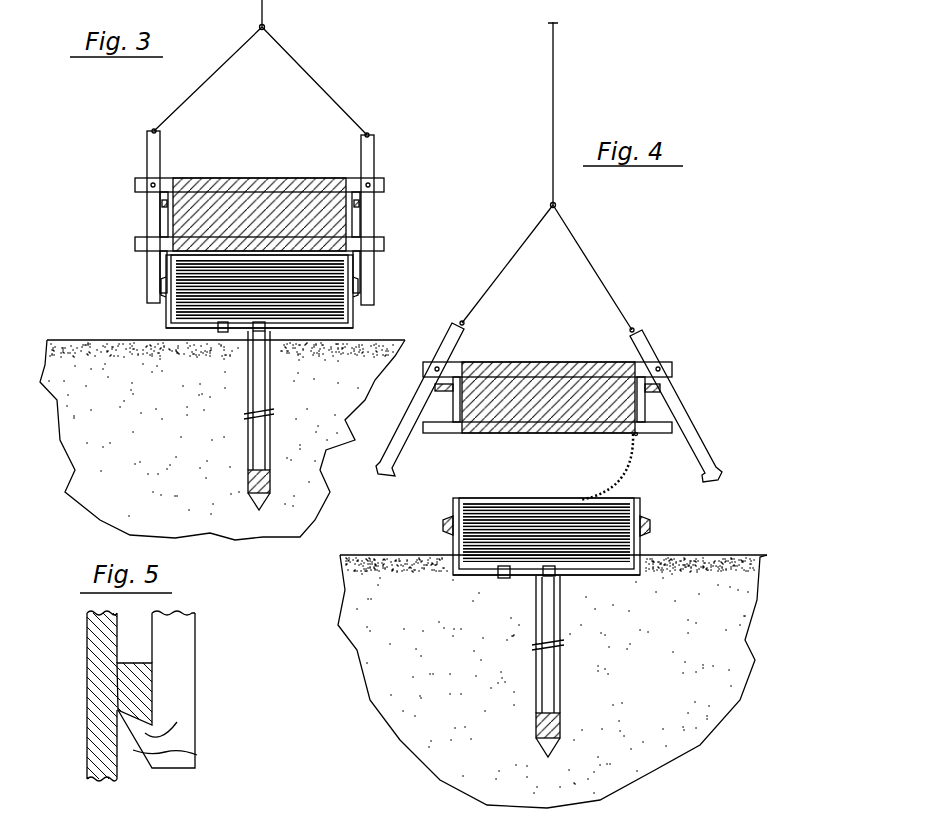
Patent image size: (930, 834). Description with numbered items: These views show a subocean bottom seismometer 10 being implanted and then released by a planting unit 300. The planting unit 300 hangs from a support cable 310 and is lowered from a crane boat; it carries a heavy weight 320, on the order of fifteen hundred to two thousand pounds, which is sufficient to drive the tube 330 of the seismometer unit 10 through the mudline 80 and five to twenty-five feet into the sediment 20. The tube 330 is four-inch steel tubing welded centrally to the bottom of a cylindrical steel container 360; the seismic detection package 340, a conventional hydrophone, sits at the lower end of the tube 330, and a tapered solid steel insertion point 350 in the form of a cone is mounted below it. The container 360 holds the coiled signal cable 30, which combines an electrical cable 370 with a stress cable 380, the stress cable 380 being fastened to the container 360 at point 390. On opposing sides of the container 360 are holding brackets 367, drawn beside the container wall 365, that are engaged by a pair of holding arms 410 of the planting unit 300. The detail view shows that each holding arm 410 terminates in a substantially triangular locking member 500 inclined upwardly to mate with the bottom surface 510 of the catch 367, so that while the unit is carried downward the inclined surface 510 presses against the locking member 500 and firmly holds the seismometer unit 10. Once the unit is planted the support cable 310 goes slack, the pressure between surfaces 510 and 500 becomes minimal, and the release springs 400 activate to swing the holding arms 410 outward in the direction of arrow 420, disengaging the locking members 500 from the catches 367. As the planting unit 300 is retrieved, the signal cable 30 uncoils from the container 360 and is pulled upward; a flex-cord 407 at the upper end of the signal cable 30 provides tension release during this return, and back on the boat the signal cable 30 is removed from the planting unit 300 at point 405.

In FIG. 3, the subocean bottom seismometer 10 is at (250, 429).
In FIG. 4, the subocean bottom seismometer 10 is at (513, 661).
In FIG. 3, the sediment 20 is at (345, 423).
In FIG. 4, the sediment 20 is at (640, 697).
In FIG. 3, the signal cable 30 is at (249, 316).
In FIG. 4, the signal cable 30 is at (521, 544).
In FIG. 3, the mudline 80 is at (75, 340).
In FIG. 4, the mudline 80 is at (720, 555).
In FIG. 3, the planting unit 300 is at (147, 157).
In FIG. 4, the planting unit 300 is at (668, 345).
In FIG. 3, the support cable 310 is at (297, 60).
In FIG. 4, the support cable 310 is at (556, 72).
In FIG. 3, the heavy weight 320 is at (220, 183).
In FIG. 4, the heavy weight 320 is at (527, 375).
In FIG. 3, the tube 330 is at (248, 445).
In FIG. 3, the seismic detection package 340 is at (248, 485).
In FIG. 3, the insertion point 350 is at (259, 511).
In FIG. 3, the container 360 is at (265, 352).
In FIG. 4, the container 360 is at (640, 580).
In FIG. 3, the pan side wall 365 is at (165, 309).
In FIG. 4, the pan side wall 365 is at (453, 509).
In FIG. 5, the pan side wall 365 is at (100, 664).
In FIG. 4, the holding bracket 367 is at (447, 527).
In FIG. 5, the holding bracket 367 is at (140, 695).
In FIG. 3, the electrical cable 370 is at (270, 385).
In FIG. 4, the electrical cable 370 is at (536, 703).
In FIG. 3, the stress cable 380 is at (243, 328).
In FIG. 3, the connection point 390 is at (218, 329).
In FIG. 4, the release spring 400 is at (447, 384).
In FIG. 4, the removal point 405 is at (641, 440).
In FIG. 4, the flex-cord 407 is at (627, 455).
In FIG. 4, the holding arm 410 is at (398, 443).
In FIG. 5, the holding arm 410 is at (178, 683).
In FIG. 4, the arrow 420 is at (437, 477).
In FIG. 5, the locking member 500 is at (197, 755).
In FIG. 5, the bottom surface 510 is at (186, 725).